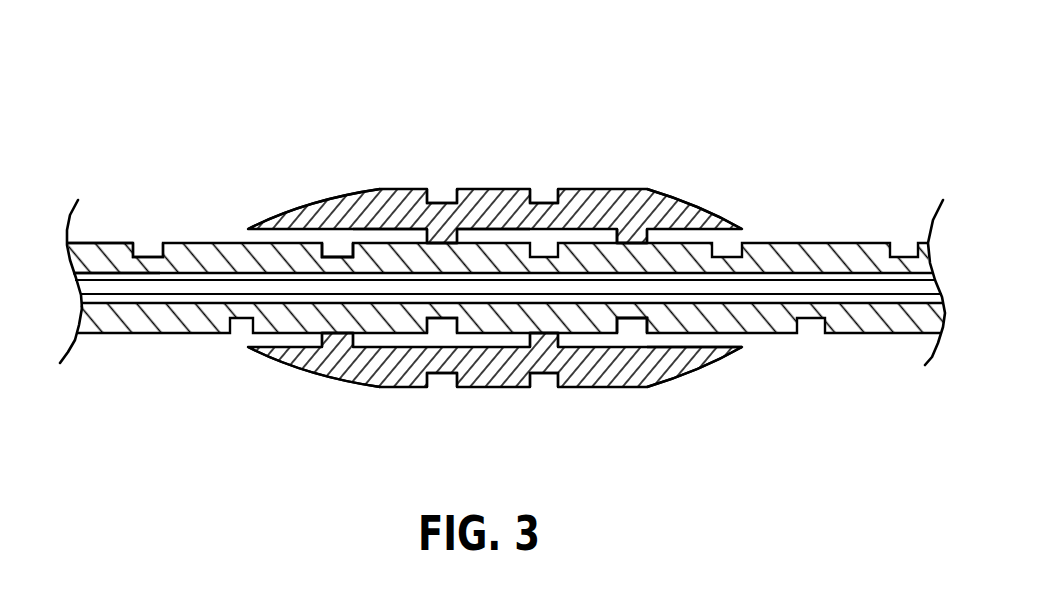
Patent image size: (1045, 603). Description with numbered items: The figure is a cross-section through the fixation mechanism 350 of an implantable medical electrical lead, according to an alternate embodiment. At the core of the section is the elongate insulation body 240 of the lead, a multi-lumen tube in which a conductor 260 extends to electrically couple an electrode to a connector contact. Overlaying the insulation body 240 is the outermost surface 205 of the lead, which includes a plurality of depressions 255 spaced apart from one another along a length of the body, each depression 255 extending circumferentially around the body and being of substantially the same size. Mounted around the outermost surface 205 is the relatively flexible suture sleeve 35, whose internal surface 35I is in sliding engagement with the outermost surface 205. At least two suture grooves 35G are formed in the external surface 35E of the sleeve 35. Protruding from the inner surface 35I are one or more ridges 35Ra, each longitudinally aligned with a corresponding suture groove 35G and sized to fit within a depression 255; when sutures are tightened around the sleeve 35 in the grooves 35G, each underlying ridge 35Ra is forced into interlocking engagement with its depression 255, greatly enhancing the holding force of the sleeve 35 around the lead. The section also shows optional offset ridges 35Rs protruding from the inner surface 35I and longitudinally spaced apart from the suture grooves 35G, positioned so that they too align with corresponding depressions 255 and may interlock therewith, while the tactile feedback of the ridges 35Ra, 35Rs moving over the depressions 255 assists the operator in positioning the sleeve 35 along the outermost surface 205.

The fixation mechanism 350 is at (217, 52).
The suture sleeve 35 is at (527, 55).
The insulation body 240 is at (105, 242).
The outermost surface 205 is at (115, 243).
The conductor 260 is at (110, 294).
The depression 255 is at (330, 250).
The external surface 35E is at (638, 189).
The suture groove 35G is at (447, 202).
The ridge 35Ra is at (437, 240).
The offset ridge 35Rs is at (332, 252).
The internal surface 35I is at (343, 237).